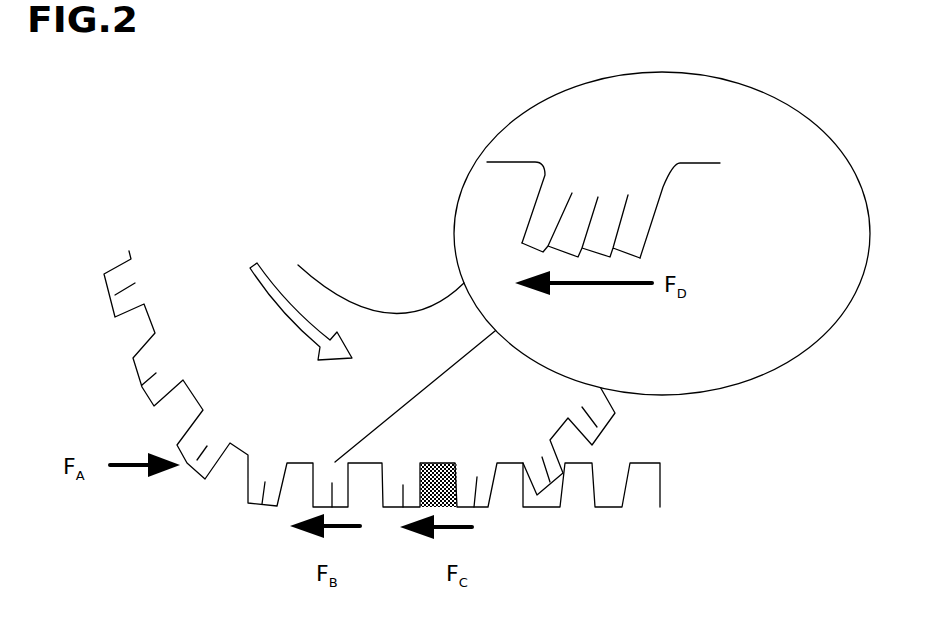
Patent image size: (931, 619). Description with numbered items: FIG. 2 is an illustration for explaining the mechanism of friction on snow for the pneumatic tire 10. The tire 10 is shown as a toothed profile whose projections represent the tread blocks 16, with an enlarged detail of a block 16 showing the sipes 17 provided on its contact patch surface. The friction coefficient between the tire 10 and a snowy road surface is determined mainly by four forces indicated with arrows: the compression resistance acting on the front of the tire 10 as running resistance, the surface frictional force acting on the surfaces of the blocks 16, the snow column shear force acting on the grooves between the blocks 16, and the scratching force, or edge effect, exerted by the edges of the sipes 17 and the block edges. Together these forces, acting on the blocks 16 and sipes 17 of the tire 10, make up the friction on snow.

The pneumatic tire 10 is at (152, 340).
The blocks 16 is at (664, 190).
The sipes 17 is at (627, 212).